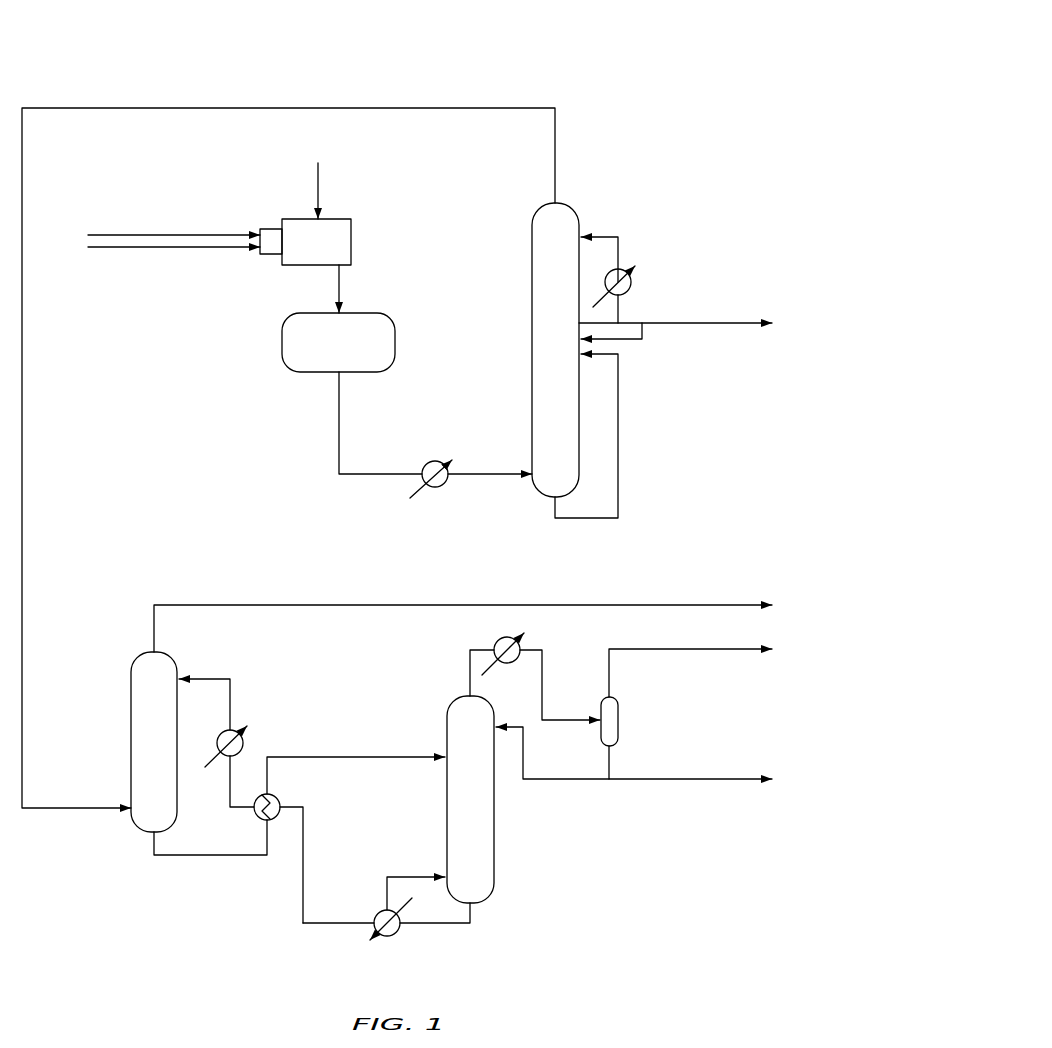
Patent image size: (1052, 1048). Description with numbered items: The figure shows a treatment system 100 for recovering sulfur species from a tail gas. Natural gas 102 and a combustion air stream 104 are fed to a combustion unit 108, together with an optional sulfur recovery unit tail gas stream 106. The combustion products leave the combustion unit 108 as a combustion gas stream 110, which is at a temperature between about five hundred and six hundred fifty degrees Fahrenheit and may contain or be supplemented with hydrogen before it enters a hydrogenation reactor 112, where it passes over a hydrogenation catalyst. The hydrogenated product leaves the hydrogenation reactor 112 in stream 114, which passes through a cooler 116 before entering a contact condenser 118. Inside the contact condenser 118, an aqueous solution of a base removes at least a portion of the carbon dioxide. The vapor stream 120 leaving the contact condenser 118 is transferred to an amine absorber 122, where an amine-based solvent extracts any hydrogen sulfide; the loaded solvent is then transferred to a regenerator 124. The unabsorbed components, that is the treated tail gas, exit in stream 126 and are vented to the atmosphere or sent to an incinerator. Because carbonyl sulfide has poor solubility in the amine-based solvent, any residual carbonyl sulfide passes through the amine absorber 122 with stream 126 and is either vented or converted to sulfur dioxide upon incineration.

The system 100 is at (580, 47).
The natural gas 102 is at (100, 233).
The combustion air stream 104 is at (100, 250).
The sulfur recovery unit tail gas stream 106 is at (321, 174).
The combustion unit 108 is at (353, 229).
The combustion gas stream 110 is at (343, 279).
The hydrogenation reactor 112 is at (265, 342).
The stream 114 is at (339, 478).
The cooler 116 is at (412, 470).
The contact condenser 118 is at (596, 376).
The vapor stream 120 is at (558, 160).
The amine absorber 122 is at (288, 777).
The regenerator 124 is at (537, 790).
The stream 126 is at (325, 610).